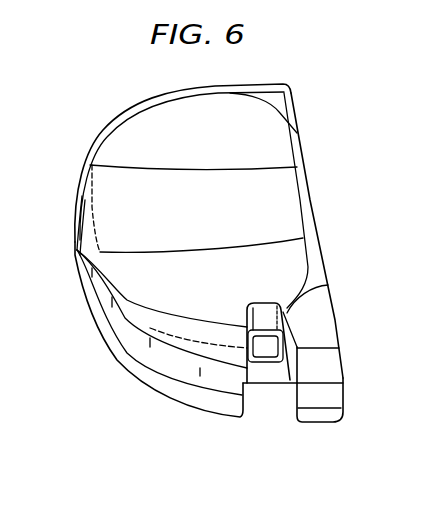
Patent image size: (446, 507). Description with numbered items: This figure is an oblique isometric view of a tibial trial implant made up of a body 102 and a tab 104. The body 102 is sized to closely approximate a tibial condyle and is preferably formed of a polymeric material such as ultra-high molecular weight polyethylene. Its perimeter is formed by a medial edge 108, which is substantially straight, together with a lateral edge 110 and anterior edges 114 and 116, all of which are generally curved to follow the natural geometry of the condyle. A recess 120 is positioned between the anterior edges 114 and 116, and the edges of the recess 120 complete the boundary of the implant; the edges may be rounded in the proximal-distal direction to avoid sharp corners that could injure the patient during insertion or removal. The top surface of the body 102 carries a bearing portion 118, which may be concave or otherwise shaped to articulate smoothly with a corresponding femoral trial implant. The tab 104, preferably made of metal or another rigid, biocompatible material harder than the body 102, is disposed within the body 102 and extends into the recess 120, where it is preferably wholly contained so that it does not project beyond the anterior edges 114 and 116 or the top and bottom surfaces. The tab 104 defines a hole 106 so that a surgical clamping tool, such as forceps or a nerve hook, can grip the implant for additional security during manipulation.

The body 102 is at (275, 135).
The tab 104 is at (264, 373).
The hole 106 is at (328, 287).
The medial edge 108 is at (317, 227).
The lateral edge 110 is at (74, 243).
The anterior edge 114 is at (326, 391).
The anterior edge 116 is at (203, 383).
The bearing portion 118 is at (241, 141).
The recess 120 is at (272, 410).